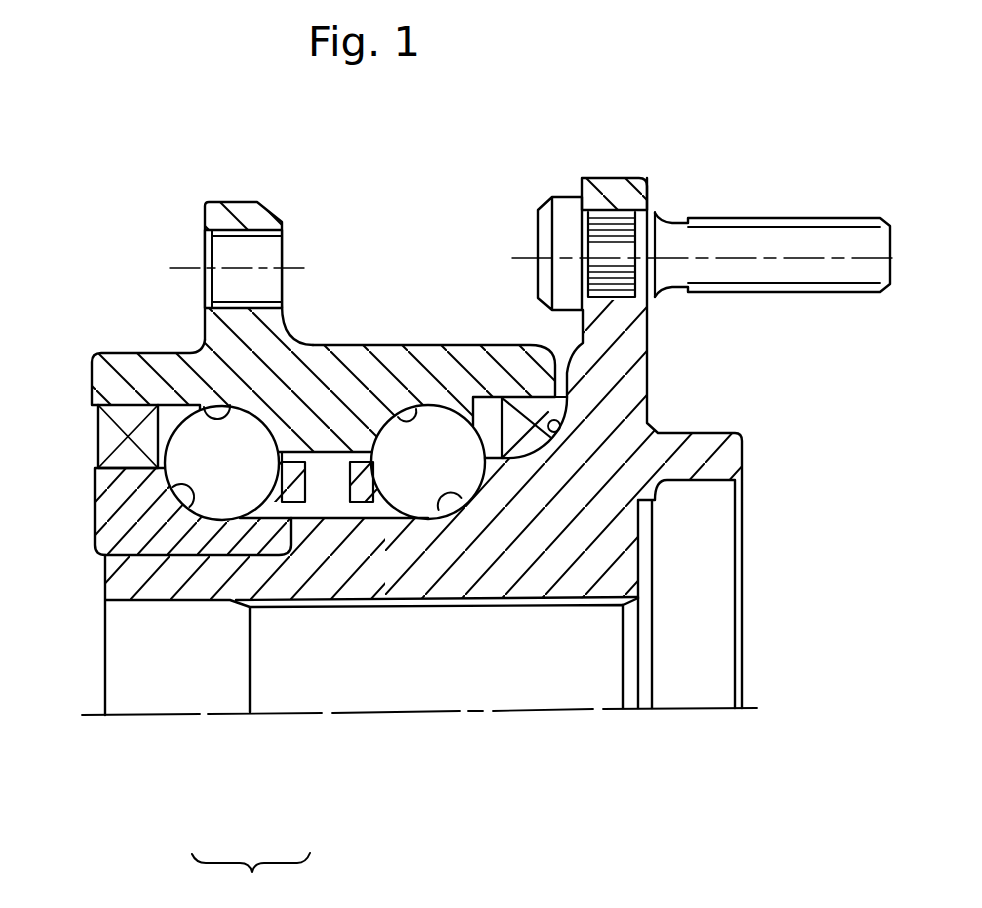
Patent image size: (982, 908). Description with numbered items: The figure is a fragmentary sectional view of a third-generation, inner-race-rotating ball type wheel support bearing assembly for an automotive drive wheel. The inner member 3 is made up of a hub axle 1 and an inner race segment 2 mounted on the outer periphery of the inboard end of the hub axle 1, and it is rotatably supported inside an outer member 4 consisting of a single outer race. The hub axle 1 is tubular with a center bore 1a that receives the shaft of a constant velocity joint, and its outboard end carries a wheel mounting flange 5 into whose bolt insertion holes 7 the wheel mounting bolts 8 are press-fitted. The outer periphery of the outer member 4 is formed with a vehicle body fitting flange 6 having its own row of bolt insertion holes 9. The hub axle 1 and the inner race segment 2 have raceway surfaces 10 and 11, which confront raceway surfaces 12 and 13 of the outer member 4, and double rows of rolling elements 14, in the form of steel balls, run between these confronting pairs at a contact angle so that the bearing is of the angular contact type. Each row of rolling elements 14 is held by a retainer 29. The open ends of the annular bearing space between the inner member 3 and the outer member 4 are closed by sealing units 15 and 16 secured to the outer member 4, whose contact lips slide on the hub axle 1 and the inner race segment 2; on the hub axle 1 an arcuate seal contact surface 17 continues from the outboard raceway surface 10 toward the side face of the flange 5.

The hub axle 1 is at (365, 562).
The center bore 1a is at (560, 607).
The inner race segment 2 is at (177, 540).
The inner member 3 is at (251, 880).
The outer member 4 is at (350, 363).
The wheel mounting flange 5 is at (613, 195).
The vehicle body fitting flange 6 is at (238, 212).
The bolt insertion hole 7 is at (640, 288).
The wheel mounting bolt 8 is at (784, 238).
The bolt insertion hole 9 is at (220, 253).
The raceway surface 10 is at (440, 503).
The raceway surface 11 is at (140, 492).
The raceway surface 12 is at (414, 404).
The raceway surface 13 is at (220, 433).
The rolling element 14 is at (290, 450).
The sealing unit 15 is at (527, 404).
The sealing unit 16 is at (107, 430).
The seal contact surface 17 is at (562, 419).
The retainer 29 is at (290, 505).